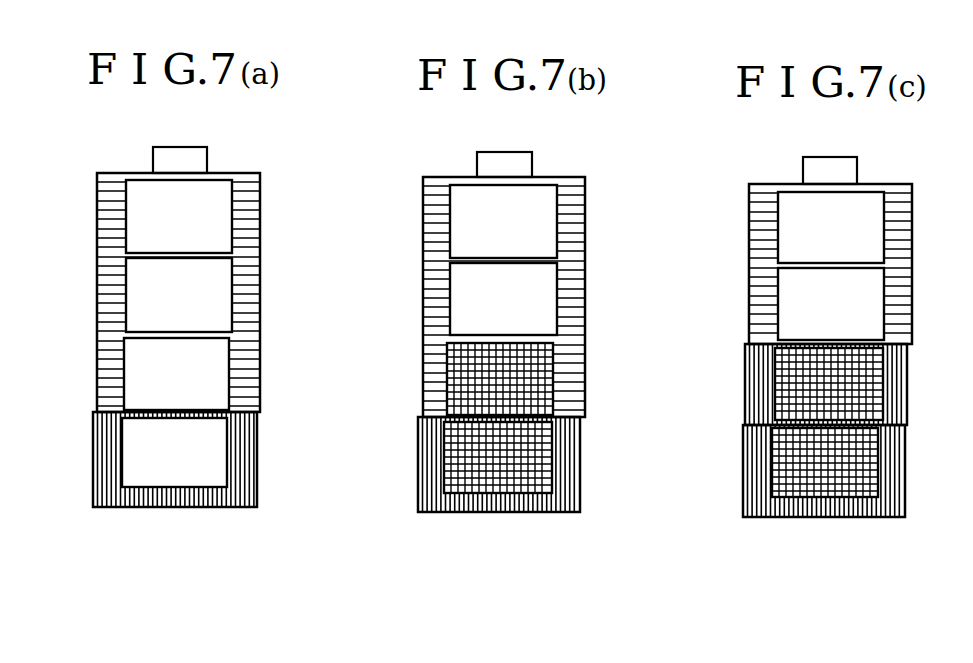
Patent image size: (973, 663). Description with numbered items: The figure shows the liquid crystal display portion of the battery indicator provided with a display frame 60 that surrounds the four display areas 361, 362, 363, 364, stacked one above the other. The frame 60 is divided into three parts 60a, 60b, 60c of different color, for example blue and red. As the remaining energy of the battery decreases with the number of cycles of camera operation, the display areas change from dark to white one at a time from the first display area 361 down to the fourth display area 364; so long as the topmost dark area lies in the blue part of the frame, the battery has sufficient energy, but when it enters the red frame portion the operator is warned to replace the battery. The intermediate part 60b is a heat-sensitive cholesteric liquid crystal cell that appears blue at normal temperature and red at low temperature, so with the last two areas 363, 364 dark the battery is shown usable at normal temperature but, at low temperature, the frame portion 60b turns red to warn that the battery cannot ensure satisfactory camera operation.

In FIG. 7A, the display frame 60 is at (138, 507).
In FIG. 7B, the display frame 60 is at (463, 512).
In FIG. 7C, the display frame 60 is at (782, 517).
In FIG. 7A, the first frame part 60a is at (105, 249).
In FIG. 7B, the first frame part 60a is at (423, 258).
In FIG. 7C, the first frame part 60a is at (755, 283).
In FIG. 7A, the intermediate frame part 60b is at (102, 360).
In FIG. 7B, the intermediate frame part 60b is at (430, 367).
In FIG. 7C, the intermediate frame part 60b is at (760, 388).
In FIG. 7A, the third frame part 60c is at (102, 475).
In FIG. 7B, the third frame part 60c is at (428, 482).
In FIG. 7C, the third frame part 60c is at (755, 485).
In FIG. 7A, the first display area 361 is at (222, 223).
In FIG. 7B, the first display area 361 is at (550, 222).
In FIG. 7C, the first display area 361 is at (872, 227).
In FIG. 7A, the second display area 362 is at (217, 303).
In FIG. 7B, the second display area 362 is at (540, 307).
In FIG. 7C, the second display area 362 is at (868, 312).
In FIG. 7A, the third display area 363 is at (215, 375).
In FIG. 7B, the third display area 363 is at (540, 380).
In FIG. 7C, the third display area 363 is at (872, 383).
In FIG. 7A, the fourth display area 364 is at (218, 447).
In FIG. 7B, the fourth display area 364 is at (537, 470).
In FIG. 7C, the fourth display area 364 is at (870, 463).